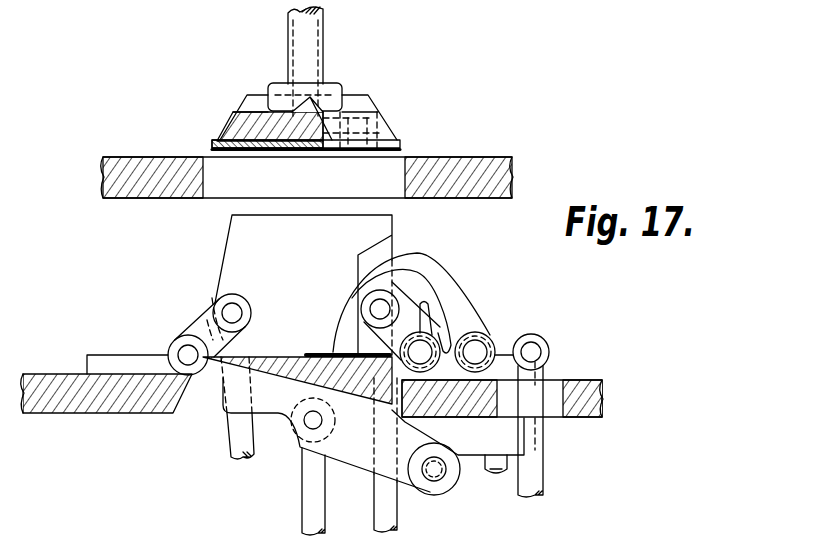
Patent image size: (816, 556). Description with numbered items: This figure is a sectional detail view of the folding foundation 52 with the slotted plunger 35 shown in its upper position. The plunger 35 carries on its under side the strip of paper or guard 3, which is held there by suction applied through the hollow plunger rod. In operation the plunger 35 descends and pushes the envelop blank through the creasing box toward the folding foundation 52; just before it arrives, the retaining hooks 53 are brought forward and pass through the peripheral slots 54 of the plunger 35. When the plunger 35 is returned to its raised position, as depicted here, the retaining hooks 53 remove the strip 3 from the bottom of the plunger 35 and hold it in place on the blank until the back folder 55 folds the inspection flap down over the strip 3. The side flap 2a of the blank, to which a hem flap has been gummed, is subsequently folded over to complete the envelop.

The plunger 35 is at (250, 110).
The peripheral slots 54 is at (348, 141).
The side flap 2a is at (231, 248).
The strip of paper or guard 3 is at (322, 350).
The retaining hooks 53 is at (455, 284).
The back folder 55 is at (425, 313).
The folding foundation 52 is at (278, 372).